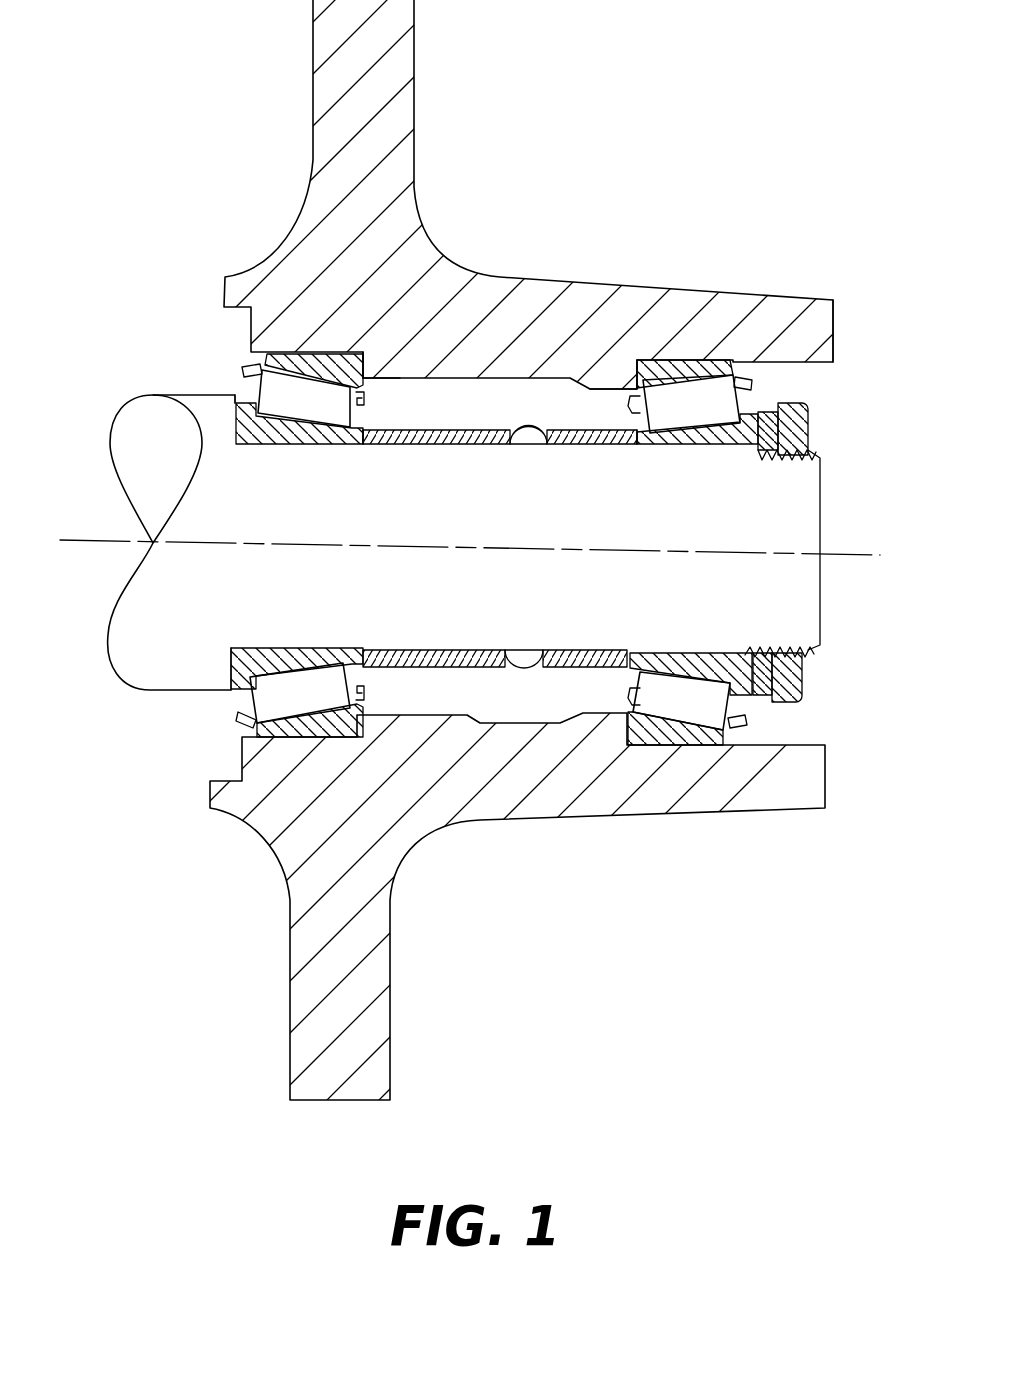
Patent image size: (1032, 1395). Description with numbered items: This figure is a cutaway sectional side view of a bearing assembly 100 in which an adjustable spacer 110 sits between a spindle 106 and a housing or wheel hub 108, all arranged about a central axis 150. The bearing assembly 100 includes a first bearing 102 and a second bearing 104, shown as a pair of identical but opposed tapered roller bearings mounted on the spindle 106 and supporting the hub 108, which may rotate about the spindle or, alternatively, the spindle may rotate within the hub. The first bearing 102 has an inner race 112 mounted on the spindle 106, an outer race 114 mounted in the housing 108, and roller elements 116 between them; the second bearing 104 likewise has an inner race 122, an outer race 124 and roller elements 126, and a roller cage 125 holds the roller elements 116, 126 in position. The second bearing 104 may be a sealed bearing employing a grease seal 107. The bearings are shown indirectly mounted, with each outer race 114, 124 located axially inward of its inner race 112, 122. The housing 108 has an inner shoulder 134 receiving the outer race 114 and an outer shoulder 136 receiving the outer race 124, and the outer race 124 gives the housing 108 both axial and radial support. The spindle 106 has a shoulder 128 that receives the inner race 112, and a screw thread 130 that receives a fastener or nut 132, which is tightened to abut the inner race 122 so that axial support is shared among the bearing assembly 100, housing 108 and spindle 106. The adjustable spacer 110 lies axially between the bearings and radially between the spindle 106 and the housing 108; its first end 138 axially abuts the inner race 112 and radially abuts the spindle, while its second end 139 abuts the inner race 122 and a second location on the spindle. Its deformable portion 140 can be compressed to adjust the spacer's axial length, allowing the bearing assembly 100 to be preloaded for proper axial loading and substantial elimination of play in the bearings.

The bearing assembly 100 is at (707, 110).
The first bearing 102 is at (197, 337).
The second bearing 104 is at (818, 377).
The spindle 106 is at (800, 520).
The seal 107 is at (763, 693).
The hub 108 is at (508, 297).
The adjustable spacer 110 is at (483, 431).
The inner race 112 is at (258, 428).
The outer race 114 is at (332, 363).
The roller elements 116 is at (329, 412).
The inner race 122 is at (747, 445).
The outer race 124 is at (670, 362).
The roller cage 125 is at (362, 399).
The roller elements 126 is at (685, 413).
The shoulder 128 is at (215, 412).
The screw thread 130 is at (814, 452).
The fastener 132 is at (808, 418).
The inner shoulder 134 is at (382, 360).
The outer shoulder 136 is at (618, 365).
The first end 138 is at (392, 441).
The second end 139 is at (625, 442).
The deformable portion 140 is at (526, 431).
The axis 150 is at (75, 540).